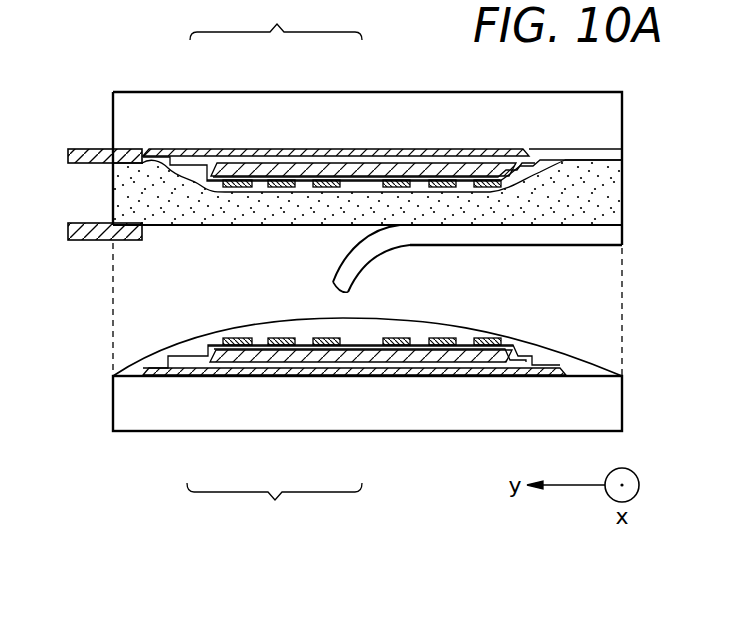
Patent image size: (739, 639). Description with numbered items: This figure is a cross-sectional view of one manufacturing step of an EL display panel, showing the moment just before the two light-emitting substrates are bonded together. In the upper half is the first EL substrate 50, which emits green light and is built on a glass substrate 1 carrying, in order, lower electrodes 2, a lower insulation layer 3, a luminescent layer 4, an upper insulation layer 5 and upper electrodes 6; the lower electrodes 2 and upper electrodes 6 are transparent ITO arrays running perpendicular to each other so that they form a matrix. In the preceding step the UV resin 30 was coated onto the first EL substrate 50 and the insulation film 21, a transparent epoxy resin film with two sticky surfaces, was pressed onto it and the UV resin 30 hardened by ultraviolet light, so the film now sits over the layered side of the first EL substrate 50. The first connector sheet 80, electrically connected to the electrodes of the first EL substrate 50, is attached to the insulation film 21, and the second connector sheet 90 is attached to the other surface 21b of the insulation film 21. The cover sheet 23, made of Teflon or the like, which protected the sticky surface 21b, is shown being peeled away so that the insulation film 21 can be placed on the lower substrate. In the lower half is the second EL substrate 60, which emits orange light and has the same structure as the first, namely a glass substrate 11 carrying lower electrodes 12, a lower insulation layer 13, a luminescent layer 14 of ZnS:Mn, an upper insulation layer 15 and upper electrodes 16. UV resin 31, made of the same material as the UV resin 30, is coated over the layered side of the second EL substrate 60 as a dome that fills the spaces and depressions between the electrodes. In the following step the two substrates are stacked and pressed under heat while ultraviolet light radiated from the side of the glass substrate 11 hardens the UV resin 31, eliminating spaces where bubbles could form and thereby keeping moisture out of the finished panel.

The glass substrate 1 is at (342, 117).
The lower electrodes 2 is at (308, 153).
The lower insulation layer 3 is at (279, 162).
The luminescent layer 4 is at (257, 170).
The upper insulation layer 5 is at (243, 176).
The upper electrodes 6 is at (228, 184).
The first EL substrate 50 is at (276, 20).
The glass substrate 11 is at (341, 408).
The lower electrodes 12 is at (312, 372).
The lower insulation layer 13 is at (283, 365).
The luminescent layer 14 is at (257, 355).
The upper insulation layer 15 is at (243, 350).
The upper electrodes 16 is at (228, 345).
The second EL substrate 60 is at (274, 506).
The insulation film 21 is at (135, 192).
The other surface of the insulation film 21b is at (200, 227).
The cover sheet 23 is at (577, 242).
The UV resin 30 is at (572, 161).
The UV resin 31 is at (573, 363).
The first connector sheet 80 is at (92, 155).
The second connector sheet 90 is at (100, 235).